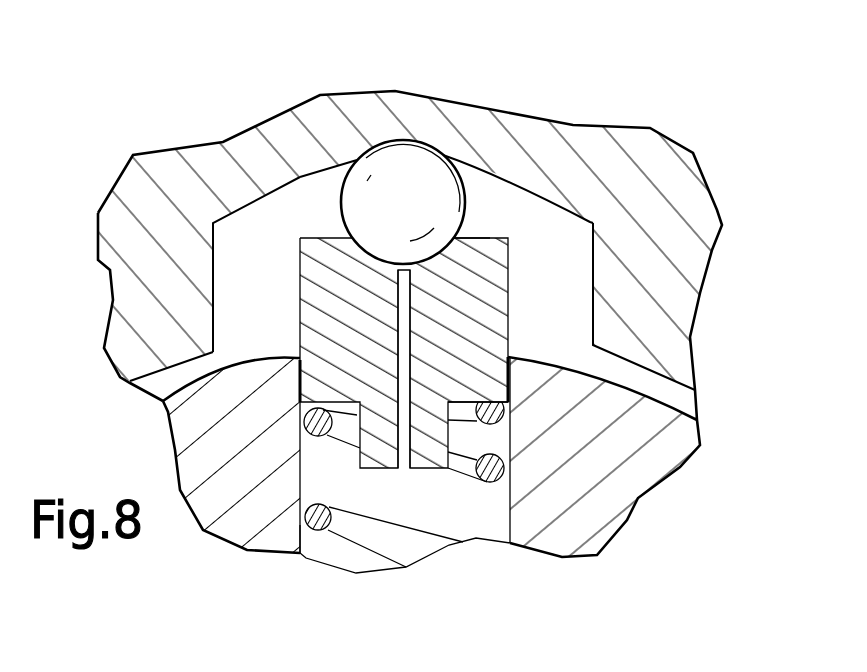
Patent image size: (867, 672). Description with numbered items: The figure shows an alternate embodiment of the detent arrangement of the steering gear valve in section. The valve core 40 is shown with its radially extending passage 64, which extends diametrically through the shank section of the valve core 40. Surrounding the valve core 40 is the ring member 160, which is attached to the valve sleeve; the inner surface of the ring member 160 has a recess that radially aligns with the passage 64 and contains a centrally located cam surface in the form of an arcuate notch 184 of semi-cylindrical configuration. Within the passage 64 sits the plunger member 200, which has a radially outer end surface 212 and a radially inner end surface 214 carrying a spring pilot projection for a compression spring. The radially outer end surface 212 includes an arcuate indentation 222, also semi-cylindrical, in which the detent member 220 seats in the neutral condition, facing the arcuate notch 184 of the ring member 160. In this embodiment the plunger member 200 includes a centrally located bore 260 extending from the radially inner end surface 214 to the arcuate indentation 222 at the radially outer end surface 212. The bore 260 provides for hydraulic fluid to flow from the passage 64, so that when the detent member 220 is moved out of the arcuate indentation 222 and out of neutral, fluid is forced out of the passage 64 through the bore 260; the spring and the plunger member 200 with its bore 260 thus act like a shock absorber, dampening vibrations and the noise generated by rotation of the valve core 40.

The valve core 40 is at (613, 495).
The radially extending passage 64 is at (300, 540).
The ring member 160 is at (592, 155).
The arcuate notch 184 is at (388, 138).
The first plunger member 200 is at (530, 311).
The radially outer end surface 212 is at (453, 253).
The radially inner end surface 214 is at (463, 405).
The first detent member 220 is at (415, 192).
The arcuate indentation 222 is at (410, 287).
The bore 260 is at (405, 458).